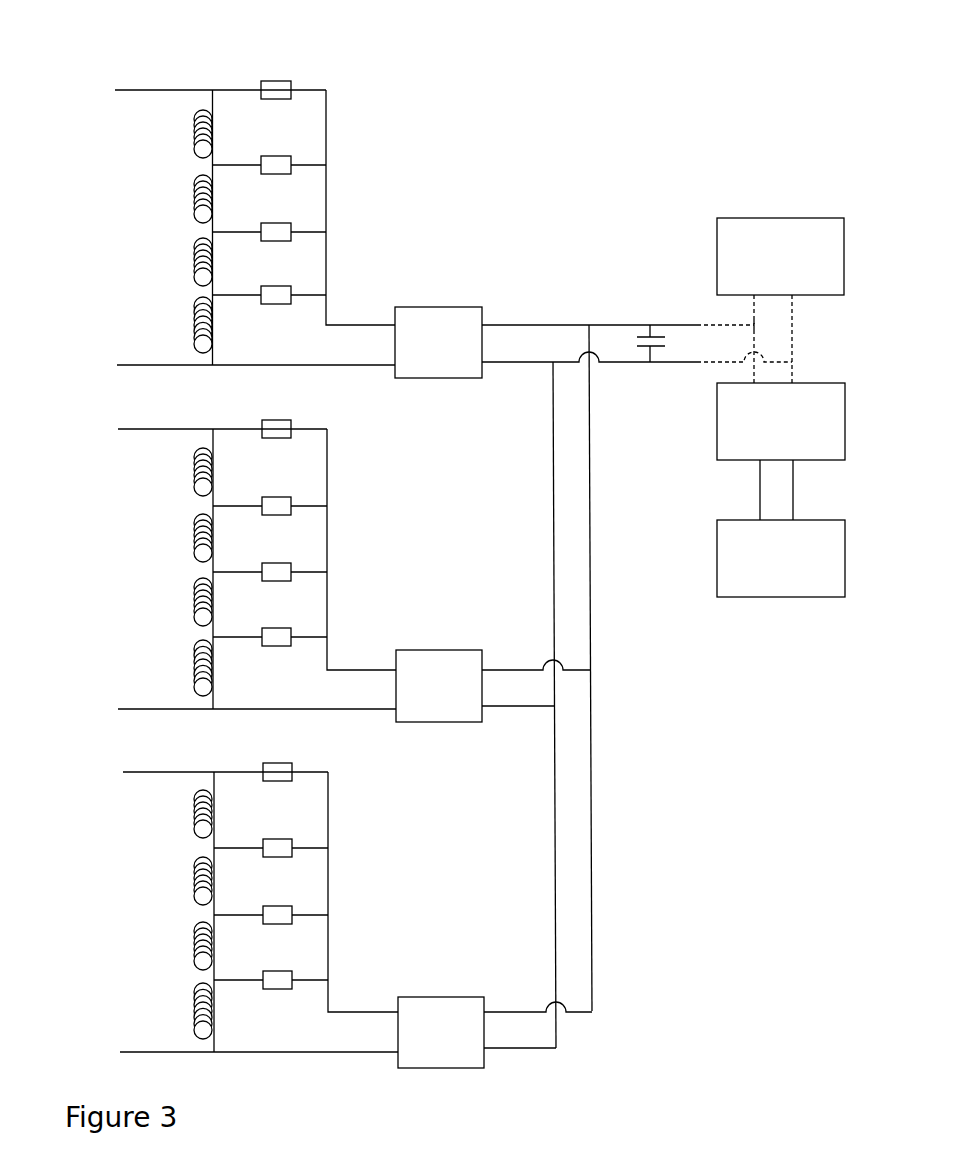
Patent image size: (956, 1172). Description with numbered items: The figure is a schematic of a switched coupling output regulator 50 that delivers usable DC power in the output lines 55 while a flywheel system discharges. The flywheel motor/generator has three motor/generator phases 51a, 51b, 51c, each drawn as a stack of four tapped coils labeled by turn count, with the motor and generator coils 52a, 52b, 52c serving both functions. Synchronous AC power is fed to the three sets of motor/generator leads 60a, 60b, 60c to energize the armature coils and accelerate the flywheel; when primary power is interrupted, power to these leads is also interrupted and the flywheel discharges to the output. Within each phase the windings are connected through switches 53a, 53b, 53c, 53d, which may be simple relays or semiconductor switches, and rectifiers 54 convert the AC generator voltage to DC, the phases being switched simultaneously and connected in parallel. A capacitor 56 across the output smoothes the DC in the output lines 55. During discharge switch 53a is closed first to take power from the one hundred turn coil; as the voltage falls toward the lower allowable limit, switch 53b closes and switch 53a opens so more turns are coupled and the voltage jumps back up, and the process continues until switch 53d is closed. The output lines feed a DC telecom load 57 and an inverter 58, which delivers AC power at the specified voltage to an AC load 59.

The switched coupling output regulator 50 is at (478, 118).
The motor/generator phase 51a is at (100, 148).
The motor/generator phase 51b is at (95, 490).
The motor/generator phase 51c is at (78, 840).
The motor and generator coil 52a is at (200, 250).
The motor and generator coil 52b is at (205, 586).
The motor and generator coil 52c is at (205, 926).
The switch 53a is at (283, 304).
The switch 53b is at (283, 241).
The switch 53c is at (283, 174).
The switch 53d is at (283, 99).
The rectifier 54 is at (447, 650).
The output lines 55 is at (683, 333).
The capacitor 56 is at (646, 336).
The output load 57 is at (767, 218).
The inverter 58 is at (717, 418).
The AC load 59 is at (717, 560).
The motor/generator leads 60a is at (148, 88).
The motor/generator leads 60b is at (128, 428).
The motor/generator leads 60c is at (163, 770).